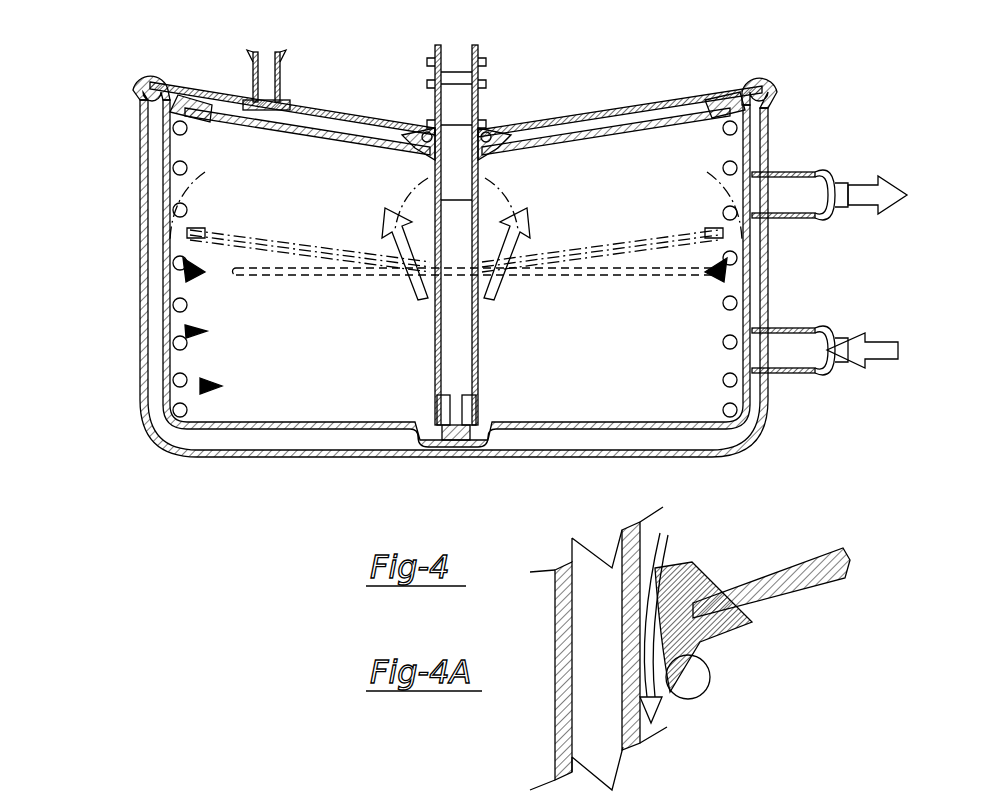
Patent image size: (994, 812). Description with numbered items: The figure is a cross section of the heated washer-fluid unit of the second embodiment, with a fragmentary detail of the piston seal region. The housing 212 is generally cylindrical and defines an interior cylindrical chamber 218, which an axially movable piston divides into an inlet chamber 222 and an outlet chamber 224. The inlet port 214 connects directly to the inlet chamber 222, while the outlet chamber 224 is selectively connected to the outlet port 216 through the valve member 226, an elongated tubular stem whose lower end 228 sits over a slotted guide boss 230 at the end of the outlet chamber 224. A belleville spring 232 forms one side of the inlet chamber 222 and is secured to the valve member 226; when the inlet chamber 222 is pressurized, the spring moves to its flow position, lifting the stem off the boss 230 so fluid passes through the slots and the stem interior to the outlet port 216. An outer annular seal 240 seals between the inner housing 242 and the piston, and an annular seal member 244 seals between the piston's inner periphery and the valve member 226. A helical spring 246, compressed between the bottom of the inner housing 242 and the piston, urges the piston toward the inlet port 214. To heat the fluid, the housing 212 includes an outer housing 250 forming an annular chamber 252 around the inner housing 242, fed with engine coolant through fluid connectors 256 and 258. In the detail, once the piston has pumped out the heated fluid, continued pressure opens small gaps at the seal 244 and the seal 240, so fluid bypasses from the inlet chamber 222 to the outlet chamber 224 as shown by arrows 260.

In FIG. 4, the housing 212 is at (142, 227).
In FIG. 4, the inlet port 214 is at (255, 76).
In FIG. 4, the outlet port 216 is at (485, 76).
In FIG. 4, the interior cylindrical chamber 218 is at (315, 347).
In FIG. 4, the inlet chamber 222 is at (338, 132).
In FIG. 4, the outlet chamber 224 is at (645, 383).
In FIG. 4A, the outlet chamber 224 is at (758, 737).
In FIG. 4, the valve member 226 is at (480, 367).
In FIG. 4A, the valve member 226 is at (556, 735).
In FIG. 4, the lower end of valve stem 228 is at (440, 403).
In FIG. 4, the slotted guide boss 230 is at (433, 440).
In FIG. 4, the belleville spring 232 is at (605, 110).
In FIG. 4, the outer annular seal 240 is at (172, 113).
In FIG. 4, the inner housing 242 is at (193, 332).
In FIG. 4, the annular seal member 244 is at (488, 257).
In FIG. 4A, the annular seal member 244 is at (683, 567).
In FIG. 4, the helical spring 246 is at (215, 385).
In FIG. 4, the outer housing 250 is at (350, 457).
In FIG. 4, the annular chamber 252 is at (720, 437).
In FIG. 4, the fluid connector 256 is at (802, 172).
In FIG. 4, the fluid connector 258 is at (790, 322).
In FIG. 4, the arrows 260 is at (185, 268).